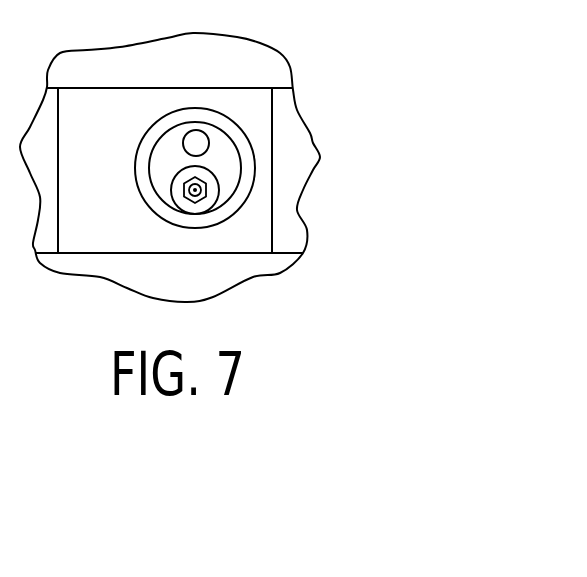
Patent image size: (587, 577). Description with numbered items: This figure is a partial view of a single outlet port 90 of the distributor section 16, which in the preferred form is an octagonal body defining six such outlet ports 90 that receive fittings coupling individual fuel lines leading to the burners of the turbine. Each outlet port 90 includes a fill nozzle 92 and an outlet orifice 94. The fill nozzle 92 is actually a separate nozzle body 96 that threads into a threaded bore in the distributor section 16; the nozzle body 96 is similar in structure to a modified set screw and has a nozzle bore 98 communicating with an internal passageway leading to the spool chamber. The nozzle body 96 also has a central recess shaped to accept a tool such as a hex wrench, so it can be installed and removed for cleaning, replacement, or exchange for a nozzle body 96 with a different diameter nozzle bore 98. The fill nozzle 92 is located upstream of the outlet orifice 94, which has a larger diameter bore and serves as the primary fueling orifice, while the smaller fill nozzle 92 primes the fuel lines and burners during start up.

The distributor section 16 is at (232, 58).
The outlet port 90 is at (169, 118).
The fill nozzle 92 is at (172, 197).
The outlet orifice 94 is at (193, 143).
The nozzle body 96 is at (186, 198).
The nozzle bore 98 is at (200, 196).